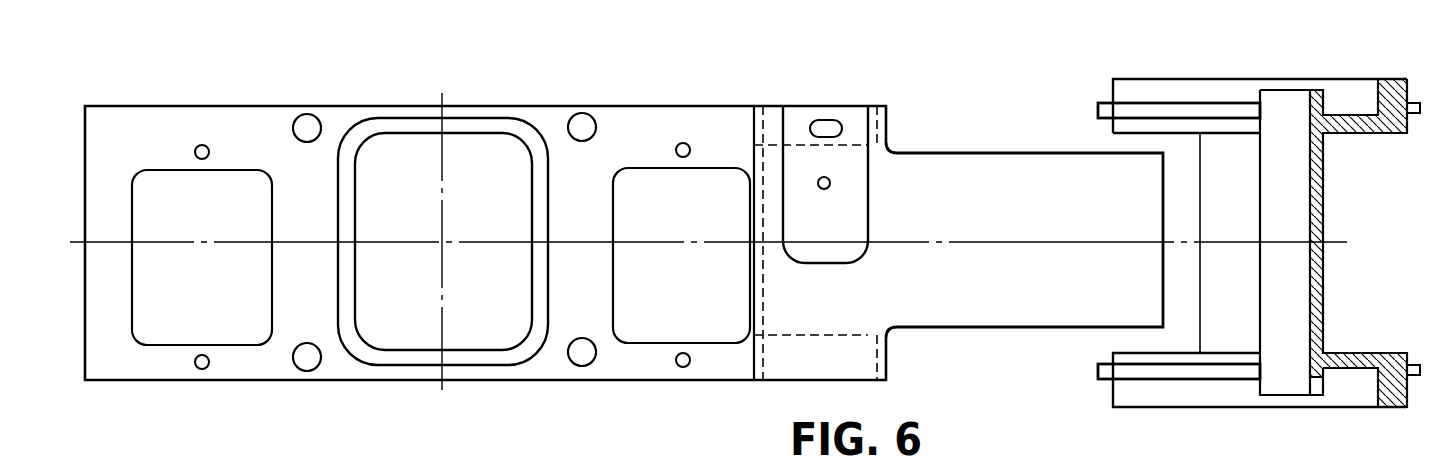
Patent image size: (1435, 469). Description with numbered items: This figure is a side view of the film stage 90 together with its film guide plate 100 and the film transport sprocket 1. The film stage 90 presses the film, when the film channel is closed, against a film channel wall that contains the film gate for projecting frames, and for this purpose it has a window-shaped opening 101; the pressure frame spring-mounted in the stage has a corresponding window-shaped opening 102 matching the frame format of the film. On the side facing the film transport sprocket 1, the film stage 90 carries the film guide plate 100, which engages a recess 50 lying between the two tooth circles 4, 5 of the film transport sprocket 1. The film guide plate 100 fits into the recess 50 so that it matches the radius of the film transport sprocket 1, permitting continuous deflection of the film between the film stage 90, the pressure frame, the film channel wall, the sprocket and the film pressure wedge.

The film transport sprocket 1 is at (1290, 87).
The tooth circle 4 is at (1183, 87).
The tooth circle 5 is at (1218, 393).
The recess 50 is at (1165, 340).
The film stage 90 is at (602, 117).
The film guide plate 100 is at (940, 173).
The window-shaped opening 101 is at (470, 145).
The window-shaped opening 102 is at (485, 287).